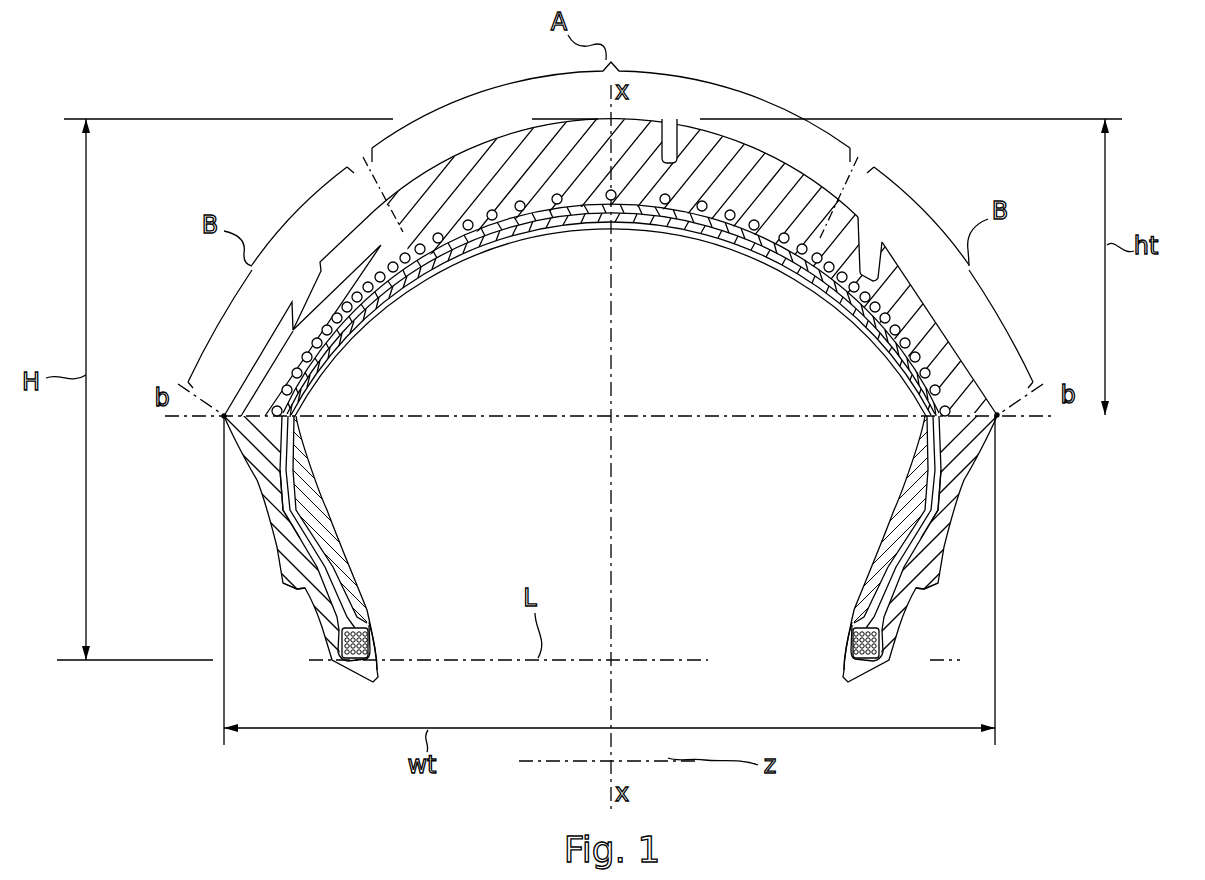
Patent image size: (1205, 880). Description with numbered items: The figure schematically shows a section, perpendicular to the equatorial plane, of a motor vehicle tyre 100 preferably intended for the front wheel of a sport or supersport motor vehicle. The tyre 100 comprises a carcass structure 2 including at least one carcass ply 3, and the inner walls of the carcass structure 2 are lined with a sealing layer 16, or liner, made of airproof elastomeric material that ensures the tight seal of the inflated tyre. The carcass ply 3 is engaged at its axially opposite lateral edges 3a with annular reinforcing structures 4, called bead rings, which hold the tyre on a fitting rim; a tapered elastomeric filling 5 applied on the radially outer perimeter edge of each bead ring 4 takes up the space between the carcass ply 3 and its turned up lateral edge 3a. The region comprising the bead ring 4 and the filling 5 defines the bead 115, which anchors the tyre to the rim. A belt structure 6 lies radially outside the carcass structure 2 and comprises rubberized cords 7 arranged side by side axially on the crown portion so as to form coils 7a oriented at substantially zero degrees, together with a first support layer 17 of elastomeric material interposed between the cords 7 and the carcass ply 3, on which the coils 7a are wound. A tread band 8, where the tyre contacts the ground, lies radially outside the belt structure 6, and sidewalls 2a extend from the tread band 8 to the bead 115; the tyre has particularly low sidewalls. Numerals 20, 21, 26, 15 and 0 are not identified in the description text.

The tyre 100 is at (440, 126).
The circumferential groove 20 is at (669, 128).
The lateral portion of tread band 21 is at (304, 292).
The lateral groove 26 is at (867, 248).
The tread band 8 is at (912, 259).
The rubberized cords 7 is at (556, 194).
The coils 7a is at (436, 256).
The first support layer 17 is at (522, 230).
The sealing layer 16 is at (660, 236).
The carcass ply 3 is at (838, 300).
The carcass structure 2 is at (282, 483).
The sidewalls 2a is at (276, 533).
The lateral edges 3a is at (305, 597).
The annular reinforcing structures 4 is at (340, 633).
The tapered elastomeric filling 5 is at (340, 590).
The belt structure 6 is at (262, 456).
The bead reinforcing strip 15 is at (392, 636).
The bead 115 is at (830, 636).
The maximum width reference point 0 is at (220, 420).